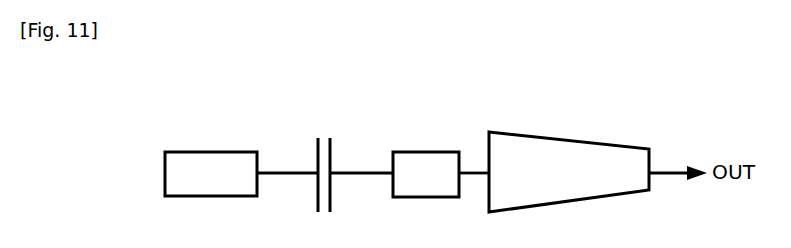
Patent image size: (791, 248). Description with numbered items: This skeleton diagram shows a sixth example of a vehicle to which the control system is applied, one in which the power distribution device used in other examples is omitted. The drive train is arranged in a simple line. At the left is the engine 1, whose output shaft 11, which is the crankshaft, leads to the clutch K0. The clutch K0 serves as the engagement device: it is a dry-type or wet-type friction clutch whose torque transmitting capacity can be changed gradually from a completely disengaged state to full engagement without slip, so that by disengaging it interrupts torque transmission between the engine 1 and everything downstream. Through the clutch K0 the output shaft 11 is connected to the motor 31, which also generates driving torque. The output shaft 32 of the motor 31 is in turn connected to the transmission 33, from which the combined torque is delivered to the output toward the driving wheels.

The engine 1 is at (218, 150).
The output shaft 11 is at (285, 170).
The clutch K0 is at (325, 162).
The motor 31 is at (421, 150).
The output shaft 32 is at (476, 170).
The transmission 33 is at (577, 140).